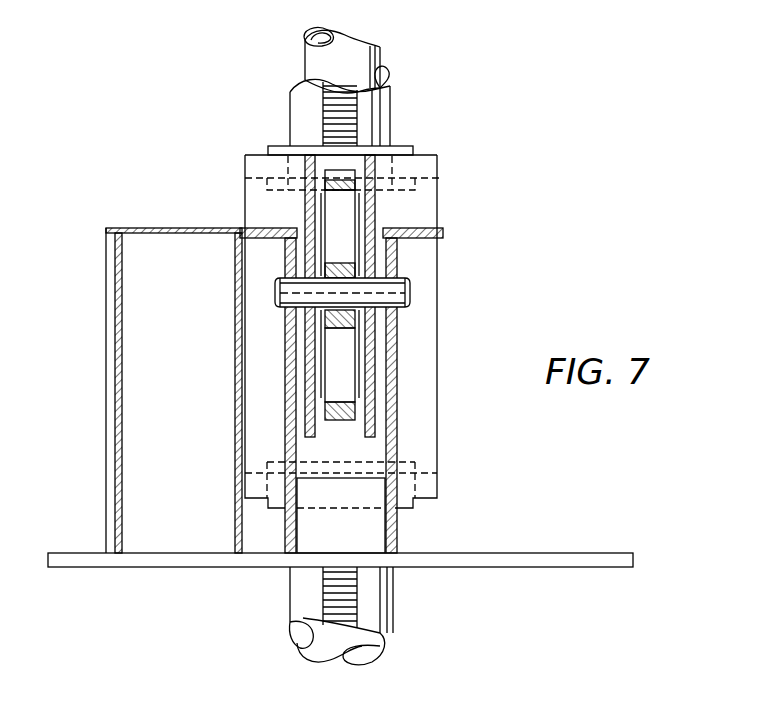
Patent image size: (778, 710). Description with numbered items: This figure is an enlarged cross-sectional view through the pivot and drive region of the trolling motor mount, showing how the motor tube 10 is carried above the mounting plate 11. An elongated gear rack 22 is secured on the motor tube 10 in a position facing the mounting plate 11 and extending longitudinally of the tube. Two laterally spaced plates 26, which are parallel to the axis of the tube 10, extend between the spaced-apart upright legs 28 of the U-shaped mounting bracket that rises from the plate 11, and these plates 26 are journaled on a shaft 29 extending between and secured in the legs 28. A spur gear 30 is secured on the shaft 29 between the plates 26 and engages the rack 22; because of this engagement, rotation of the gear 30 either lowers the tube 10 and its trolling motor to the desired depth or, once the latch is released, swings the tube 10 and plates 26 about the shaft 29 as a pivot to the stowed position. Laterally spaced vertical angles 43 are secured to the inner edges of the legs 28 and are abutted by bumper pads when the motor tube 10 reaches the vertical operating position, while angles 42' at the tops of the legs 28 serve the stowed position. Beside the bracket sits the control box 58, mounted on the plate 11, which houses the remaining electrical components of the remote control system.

The motor tube 10 is at (399, 104).
The mounting plate 11 is at (541, 556).
The gear rack 22 is at (333, 110).
The laterally spaced plates 26 is at (308, 180).
The upright legs 28 is at (282, 382).
The shaft 29 is at (402, 295).
The spur gear 30 is at (341, 410).
The flange 42' is at (349, 212).
The vertical angles 43 is at (258, 432).
The control box 58 is at (146, 231).